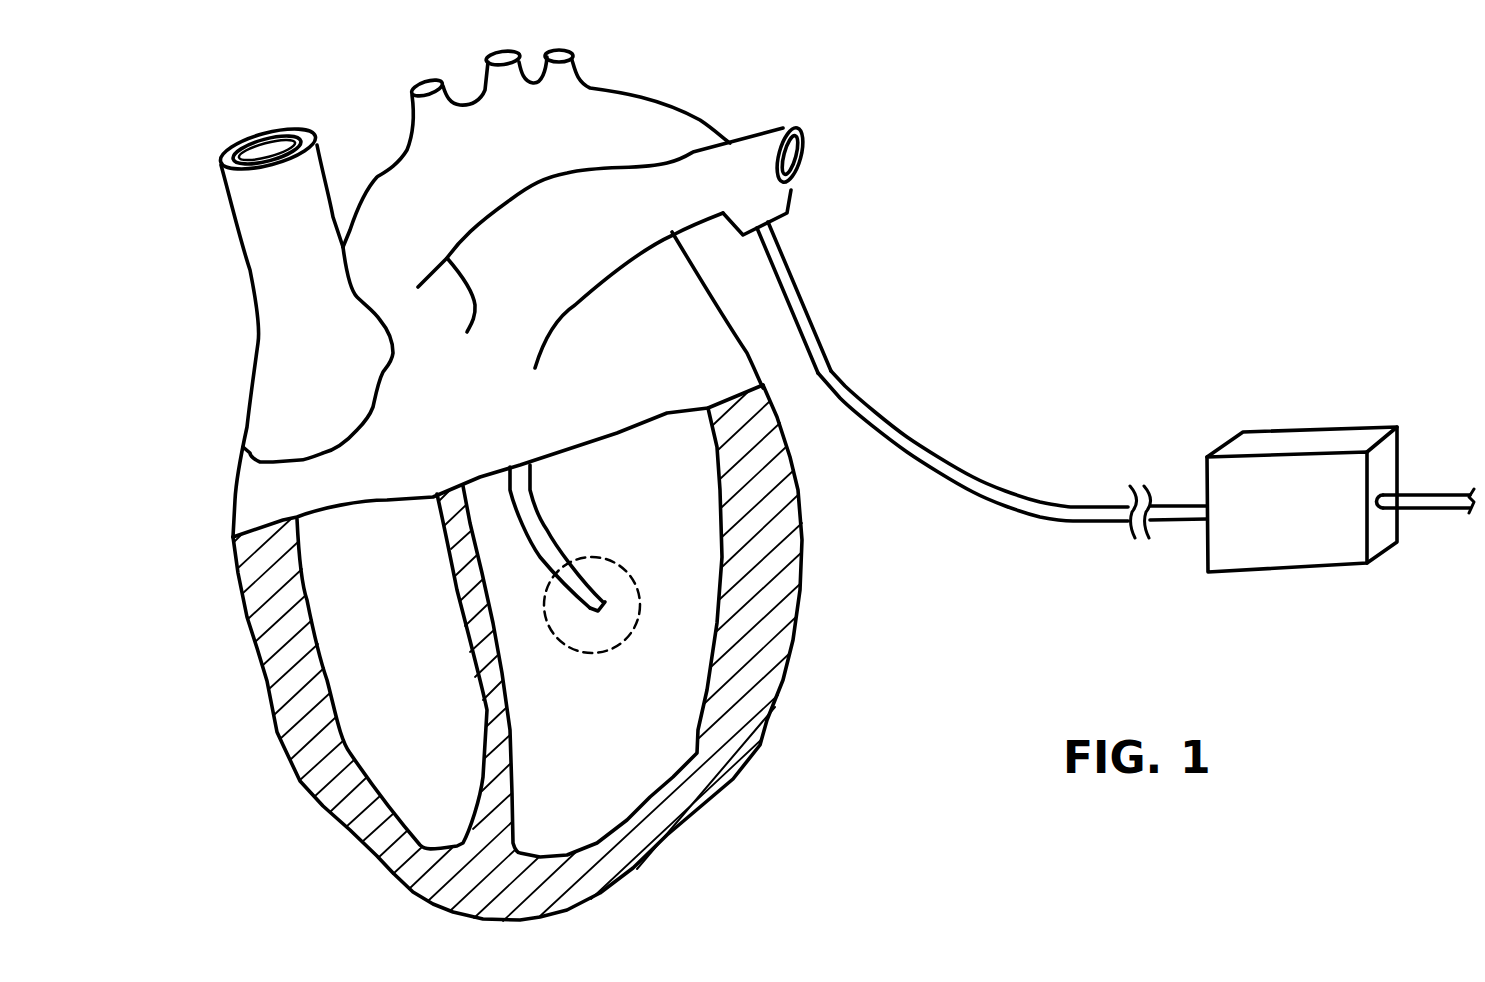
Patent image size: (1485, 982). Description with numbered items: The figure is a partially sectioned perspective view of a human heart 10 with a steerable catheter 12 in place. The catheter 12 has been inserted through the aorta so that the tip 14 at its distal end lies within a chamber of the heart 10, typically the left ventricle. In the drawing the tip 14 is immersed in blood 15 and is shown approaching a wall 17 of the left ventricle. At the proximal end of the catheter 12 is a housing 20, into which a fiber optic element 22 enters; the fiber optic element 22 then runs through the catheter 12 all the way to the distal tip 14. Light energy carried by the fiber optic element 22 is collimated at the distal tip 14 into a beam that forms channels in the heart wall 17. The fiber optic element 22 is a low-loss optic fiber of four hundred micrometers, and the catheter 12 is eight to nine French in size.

The human heart 10 is at (513, 485).
The steerable catheter 12 is at (820, 322).
The tip 14 is at (640, 587).
The blood 15 is at (670, 743).
The wall of the left ventricle 17 is at (765, 665).
The housing 20 is at (1273, 438).
The fiber optic element 22 is at (1420, 510).